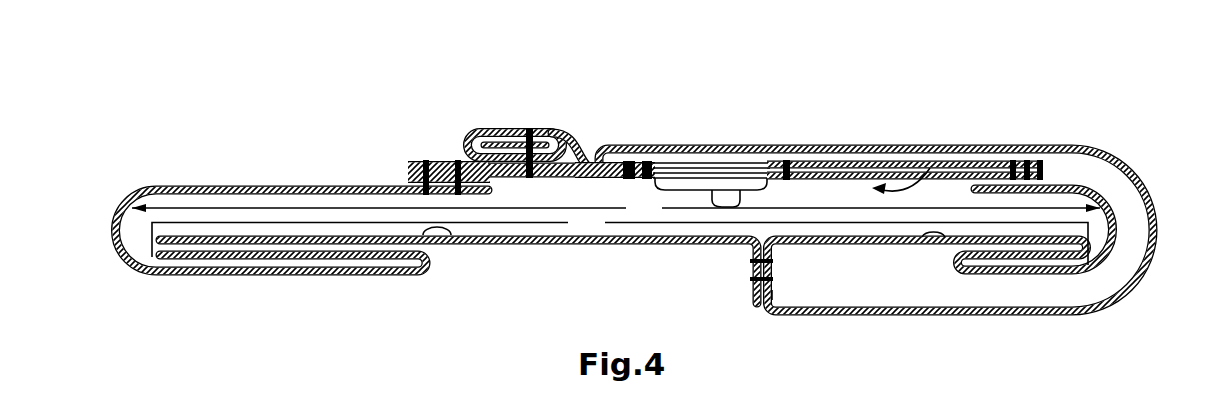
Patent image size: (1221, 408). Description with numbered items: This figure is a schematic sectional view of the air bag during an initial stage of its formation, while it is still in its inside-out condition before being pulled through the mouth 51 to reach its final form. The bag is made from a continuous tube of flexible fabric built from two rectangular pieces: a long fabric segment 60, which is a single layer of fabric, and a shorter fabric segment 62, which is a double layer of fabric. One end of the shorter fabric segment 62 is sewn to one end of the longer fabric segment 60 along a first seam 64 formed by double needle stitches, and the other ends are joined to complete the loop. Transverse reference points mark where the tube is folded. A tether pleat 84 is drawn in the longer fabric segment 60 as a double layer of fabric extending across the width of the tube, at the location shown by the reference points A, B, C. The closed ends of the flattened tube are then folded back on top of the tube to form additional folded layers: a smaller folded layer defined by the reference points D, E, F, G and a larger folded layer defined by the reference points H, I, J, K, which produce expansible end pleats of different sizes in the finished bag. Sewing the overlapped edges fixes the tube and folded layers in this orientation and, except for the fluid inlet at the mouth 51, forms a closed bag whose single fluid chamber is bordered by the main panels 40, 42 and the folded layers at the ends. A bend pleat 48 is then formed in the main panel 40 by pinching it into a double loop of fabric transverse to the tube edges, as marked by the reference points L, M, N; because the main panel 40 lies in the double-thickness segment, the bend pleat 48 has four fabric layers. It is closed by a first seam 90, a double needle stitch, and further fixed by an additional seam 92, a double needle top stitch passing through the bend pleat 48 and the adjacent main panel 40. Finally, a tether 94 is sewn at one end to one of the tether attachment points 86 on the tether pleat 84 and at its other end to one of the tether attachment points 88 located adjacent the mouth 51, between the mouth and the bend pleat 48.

The main panel 40 is at (616, 208).
The main panel 42 is at (620, 237).
The bend pleat 48 is at (517, 108).
The first seam 90 is at (532, 128).
The additional seam 92 is at (523, 133).
The first seam 64 is at (423, 160).
The tether attachment points 88 is at (651, 160).
The mouth 51 is at (740, 207).
The tether 94 is at (826, 146).
The shorter fabric segment 62 is at (903, 197).
The long fabric segment 60 is at (513, 245).
The tether pleat 84 is at (748, 288).
The tether attachment points 86 is at (774, 296).
The reference point A is at (774, 247).
The reference point B is at (756, 314).
The reference point C is at (750, 244).
The reference point D is at (1150, 213).
The reference point E is at (960, 262).
The reference point F is at (1058, 263).
The reference point G is at (922, 240).
The reference point H is at (455, 238).
The reference point I is at (177, 249).
The reference point J is at (431, 262).
The reference point K is at (112, 212).
The reference point L is at (570, 134).
The reference point M is at (456, 158).
The reference point N is at (592, 142).